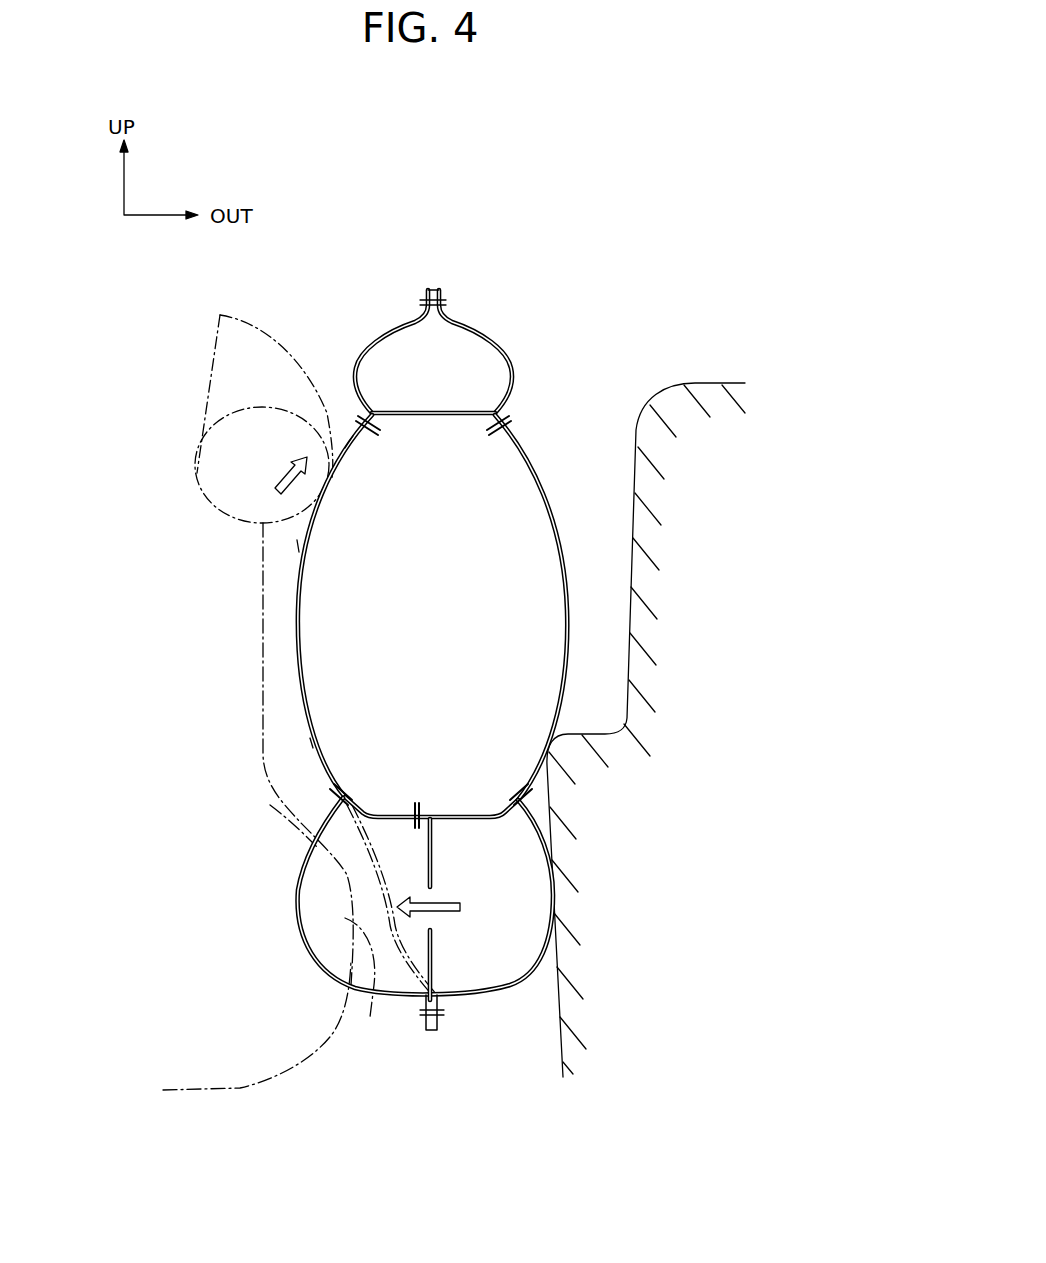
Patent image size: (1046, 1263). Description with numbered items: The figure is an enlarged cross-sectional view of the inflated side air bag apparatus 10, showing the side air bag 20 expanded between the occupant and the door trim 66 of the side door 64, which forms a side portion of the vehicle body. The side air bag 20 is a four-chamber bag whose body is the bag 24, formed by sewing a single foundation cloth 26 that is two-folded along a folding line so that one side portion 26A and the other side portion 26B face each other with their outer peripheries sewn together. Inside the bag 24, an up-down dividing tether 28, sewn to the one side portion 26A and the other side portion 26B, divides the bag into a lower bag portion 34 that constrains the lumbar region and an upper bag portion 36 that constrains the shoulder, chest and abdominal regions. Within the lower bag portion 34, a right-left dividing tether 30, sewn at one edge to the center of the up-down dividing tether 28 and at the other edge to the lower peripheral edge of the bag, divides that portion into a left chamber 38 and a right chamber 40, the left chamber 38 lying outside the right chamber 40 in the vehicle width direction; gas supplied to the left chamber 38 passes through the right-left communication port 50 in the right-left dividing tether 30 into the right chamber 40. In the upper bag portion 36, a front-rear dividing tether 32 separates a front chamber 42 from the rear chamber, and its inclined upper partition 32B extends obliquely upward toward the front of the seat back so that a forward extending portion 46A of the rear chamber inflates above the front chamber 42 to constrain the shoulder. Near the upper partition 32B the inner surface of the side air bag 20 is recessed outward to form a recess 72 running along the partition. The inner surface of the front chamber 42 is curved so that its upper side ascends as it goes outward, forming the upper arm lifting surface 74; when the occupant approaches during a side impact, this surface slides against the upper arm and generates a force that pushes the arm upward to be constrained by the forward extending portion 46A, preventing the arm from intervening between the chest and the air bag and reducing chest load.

The side air bag apparatus 10 is at (579, 282).
The side air bag 20 is at (553, 458).
The bag 24 is at (300, 710).
The foundation cloth 26 is at (409, 596).
The one side portion 26A is at (565, 575).
The other side portion 26B is at (290, 590).
The up-down dividing tether 28 is at (466, 812).
The right-left dividing tether 30 is at (438, 975).
The front-rear dividing tether 32 is at (433, 418).
The upper partition 32B is at (438, 472).
The lower bag portion 34 is at (298, 918).
The upper bag portion 36 is at (290, 645).
The left chamber 38 is at (456, 869).
The right chamber 40 is at (391, 869).
The front chamber 42 is at (447, 627).
The forward extending portion 46A is at (457, 389).
The right-left communication port 50 is at (440, 928).
The side door 64 is at (692, 382).
The door trim 66 is at (651, 704).
The recess 72 is at (358, 398).
The upper arm lifting surface 74 is at (343, 440).